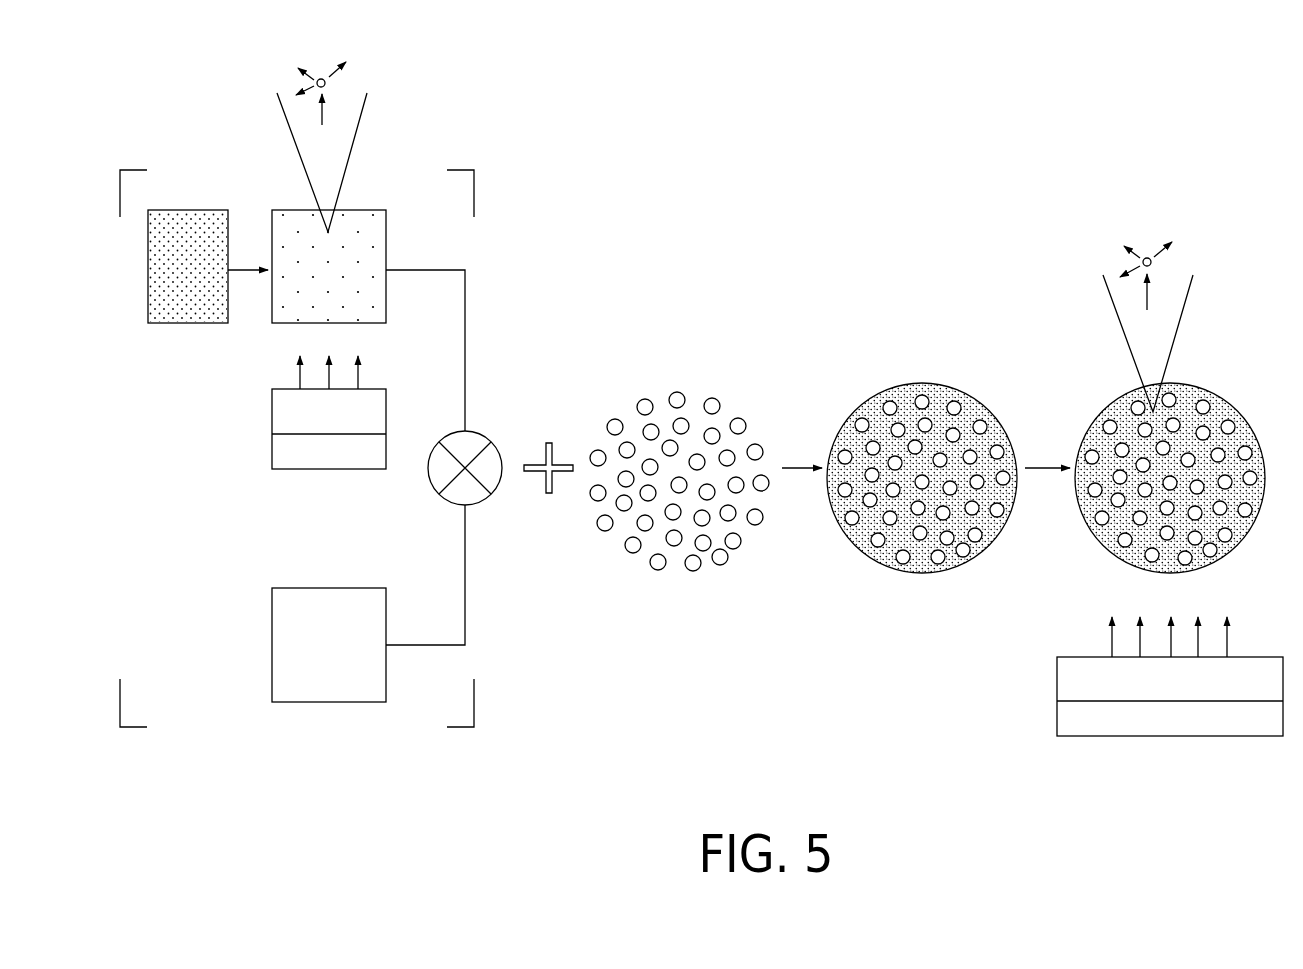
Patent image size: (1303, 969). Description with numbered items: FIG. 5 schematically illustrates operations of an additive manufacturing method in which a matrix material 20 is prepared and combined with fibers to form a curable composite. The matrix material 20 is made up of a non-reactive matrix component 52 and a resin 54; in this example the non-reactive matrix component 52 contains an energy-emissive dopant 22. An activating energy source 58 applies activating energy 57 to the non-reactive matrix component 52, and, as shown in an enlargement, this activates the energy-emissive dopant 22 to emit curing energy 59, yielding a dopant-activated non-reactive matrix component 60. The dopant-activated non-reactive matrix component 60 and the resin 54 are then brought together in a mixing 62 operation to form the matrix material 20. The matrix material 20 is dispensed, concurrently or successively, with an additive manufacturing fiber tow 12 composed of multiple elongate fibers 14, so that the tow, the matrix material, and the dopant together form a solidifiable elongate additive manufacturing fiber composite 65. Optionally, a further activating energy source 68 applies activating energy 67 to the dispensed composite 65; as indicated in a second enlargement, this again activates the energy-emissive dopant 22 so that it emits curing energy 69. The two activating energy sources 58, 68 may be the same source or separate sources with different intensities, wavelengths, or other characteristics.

The additive manufacturing fiber tow 12 is at (679, 486).
The elongate fibers 14 is at (738, 418).
The matrix material 20 is at (122, 168).
The energy-emissive dopant 22 is at (195, 245).
The non-reactive matrix component 52 is at (183, 326).
The resin 54 is at (269, 645).
The activating energy 57 is at (323, 110).
The activating energy source 58 is at (272, 419).
The curing energy 59 is at (312, 80).
The dopant-activated non-reactive matrix component 60 is at (386, 232).
The mixing 62 is at (488, 440).
The solidifiable elongate additive manufacturing fiber composite 65 is at (862, 572).
The activating energy 67 is at (1148, 295).
The activating energy source 68 is at (1057, 686).
The curing energy 69 is at (1138, 262).